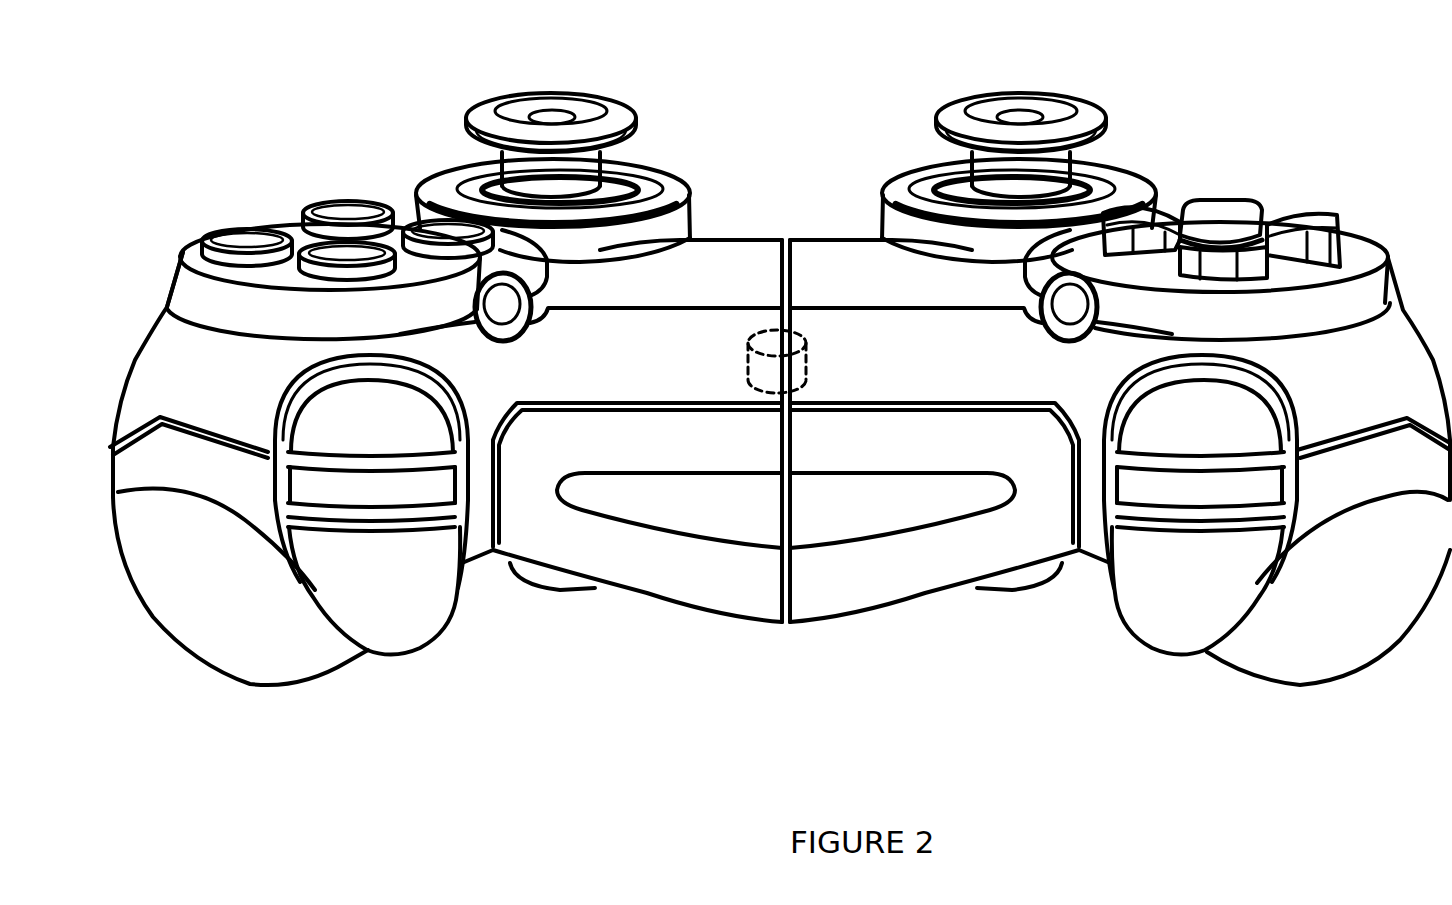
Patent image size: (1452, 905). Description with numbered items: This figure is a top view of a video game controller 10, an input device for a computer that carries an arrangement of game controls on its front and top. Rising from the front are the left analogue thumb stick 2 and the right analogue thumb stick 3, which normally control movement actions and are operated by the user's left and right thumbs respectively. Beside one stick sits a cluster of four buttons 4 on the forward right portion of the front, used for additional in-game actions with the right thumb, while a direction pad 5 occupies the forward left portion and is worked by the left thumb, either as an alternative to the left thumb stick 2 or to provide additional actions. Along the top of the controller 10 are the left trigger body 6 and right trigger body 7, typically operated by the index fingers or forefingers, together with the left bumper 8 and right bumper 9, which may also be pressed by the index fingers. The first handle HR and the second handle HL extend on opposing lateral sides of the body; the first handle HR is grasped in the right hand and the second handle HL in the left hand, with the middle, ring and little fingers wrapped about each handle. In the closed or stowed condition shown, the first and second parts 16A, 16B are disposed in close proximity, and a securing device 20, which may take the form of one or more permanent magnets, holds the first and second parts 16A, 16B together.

The left analogue thumb stick 2 is at (998, 105).
The right analogue thumb stick 3 is at (510, 110).
The buttons 4 is at (407, 203).
The direction pad 5 is at (1228, 222).
The left trigger body 6 is at (1200, 605).
The right trigger body 7 is at (393, 615).
The left bumper 8 is at (1205, 438).
The right bumper 9 is at (393, 438).
The video game controller 10 is at (1385, 168).
The first part 16A is at (881, 598).
The second part 16B is at (750, 598).
The securing device 20 is at (797, 345).
The first handle HR is at (178, 633).
The second handle HL is at (1389, 604).